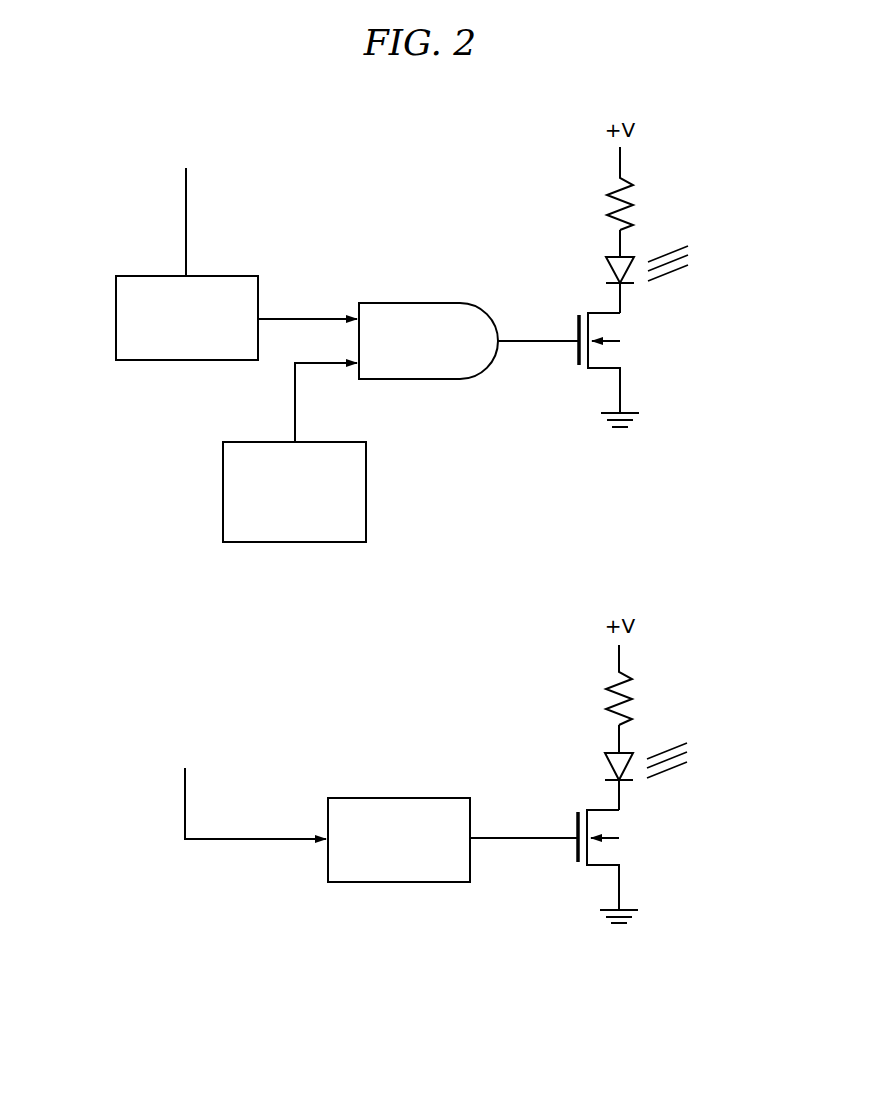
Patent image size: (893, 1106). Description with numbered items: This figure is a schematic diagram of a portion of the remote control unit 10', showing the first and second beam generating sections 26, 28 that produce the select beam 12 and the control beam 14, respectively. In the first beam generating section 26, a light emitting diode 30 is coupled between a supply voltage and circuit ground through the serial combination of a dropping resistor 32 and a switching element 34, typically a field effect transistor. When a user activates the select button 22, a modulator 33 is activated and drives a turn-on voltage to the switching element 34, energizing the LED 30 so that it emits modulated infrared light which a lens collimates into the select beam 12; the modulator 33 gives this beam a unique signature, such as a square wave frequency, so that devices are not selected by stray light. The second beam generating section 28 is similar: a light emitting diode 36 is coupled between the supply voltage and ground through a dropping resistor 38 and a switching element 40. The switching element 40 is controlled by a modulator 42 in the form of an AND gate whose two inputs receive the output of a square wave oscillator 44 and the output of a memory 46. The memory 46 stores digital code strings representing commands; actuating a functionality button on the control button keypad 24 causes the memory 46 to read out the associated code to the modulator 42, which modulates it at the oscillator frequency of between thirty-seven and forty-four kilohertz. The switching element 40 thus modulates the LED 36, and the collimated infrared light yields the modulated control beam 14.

The remote control unit 10' is at (722, 520).
The select beam 12 is at (703, 744).
The control beam 14 is at (703, 247).
The select button 22 is at (187, 726).
The control button keypad 24 is at (190, 96).
The first beam generating section 26 is at (493, 630).
The second beam generating section 28 is at (493, 499).
The light emitting diode 30 is at (578, 745).
The dropping resistor 32 is at (650, 694).
The modulator 33 is at (398, 883).
The switching element 34 is at (645, 848).
The light emitting diode 36 is at (580, 246).
The dropping resistor 38 is at (650, 197).
The switching element 40 is at (645, 352).
The modulator 42 is at (466, 385).
The square wave oscillator 44 is at (223, 490).
The memory 46 is at (116, 320).